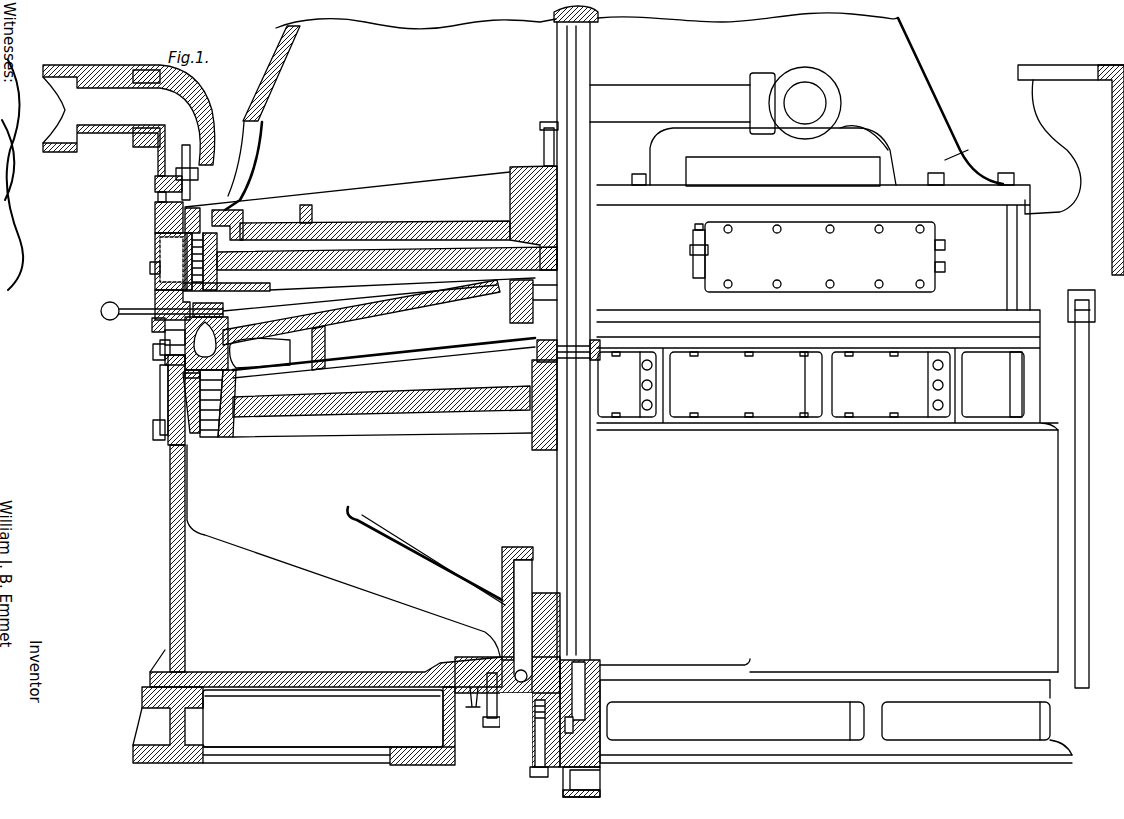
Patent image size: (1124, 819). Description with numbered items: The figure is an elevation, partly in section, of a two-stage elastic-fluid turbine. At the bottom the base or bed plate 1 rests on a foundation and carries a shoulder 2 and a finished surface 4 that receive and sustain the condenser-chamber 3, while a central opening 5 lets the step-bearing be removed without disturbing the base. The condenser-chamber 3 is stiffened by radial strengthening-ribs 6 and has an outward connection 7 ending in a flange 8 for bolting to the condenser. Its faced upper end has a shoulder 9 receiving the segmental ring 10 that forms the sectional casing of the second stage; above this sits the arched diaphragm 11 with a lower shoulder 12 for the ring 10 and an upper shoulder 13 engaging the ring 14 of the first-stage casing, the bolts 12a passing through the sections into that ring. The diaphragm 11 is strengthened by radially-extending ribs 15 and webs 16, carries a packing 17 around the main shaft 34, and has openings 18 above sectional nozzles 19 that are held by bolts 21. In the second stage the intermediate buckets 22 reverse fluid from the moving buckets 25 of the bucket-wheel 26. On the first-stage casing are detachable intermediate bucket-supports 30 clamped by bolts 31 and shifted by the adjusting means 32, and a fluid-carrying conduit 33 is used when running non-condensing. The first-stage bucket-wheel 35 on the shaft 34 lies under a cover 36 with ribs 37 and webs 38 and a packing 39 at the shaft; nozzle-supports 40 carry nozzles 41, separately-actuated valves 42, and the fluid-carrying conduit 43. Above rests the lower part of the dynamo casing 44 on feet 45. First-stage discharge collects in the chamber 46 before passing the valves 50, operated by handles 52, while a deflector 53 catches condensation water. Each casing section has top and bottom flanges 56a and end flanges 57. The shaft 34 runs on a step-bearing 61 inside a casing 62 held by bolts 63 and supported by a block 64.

The base or bed plate 1 is at (142, 695).
The shoulder 2 is at (203, 708).
The condenser-chamber 3 is at (343, 550).
The finished surface 4 is at (443, 703).
The central opening 5 is at (472, 712).
The strengthening-ribs 6 is at (385, 535).
The connection 7 is at (1004, 551).
The flange 8 is at (1090, 638).
The shoulder 9 is at (168, 455).
The segmental ring 10 is at (160, 407).
The diaphragm 11 is at (155, 340).
The lower shoulder 12 is at (160, 358).
The bolts 12a is at (160, 356).
The upper shoulder 13 is at (152, 325).
The ring 14 is at (128, 292).
The radially-extending ribs 15 is at (378, 312).
The webs 16 is at (325, 345).
The packing 17 is at (580, 302).
The openings 18 is at (210, 325).
The nozzles 19 is at (240, 358).
The bolts 21 is at (185, 360).
The intermediate buckets 22 is at (240, 387).
The moving buckets 25 is at (185, 380).
The bucket-wheel 26 is at (425, 400).
The intermediate bucket-supports 30 is at (130, 234).
The bolts 31 is at (733, 235).
The adjusting means 32 is at (692, 238).
The fluid-carrying conduit 33 is at (1066, 128).
The main shaft 34 is at (566, 97).
The bucket-wheel 35 is at (445, 250).
The cover 36 is at (352, 233).
The radially-extending ribs 37 is at (400, 193).
The webs 38 is at (308, 205).
The packing 39 is at (547, 165).
The nozzle-supports 40 is at (862, 150).
The nozzle 41 is at (245, 222).
The separately-actuated valves 42 is at (223, 186).
The fluid-carrying conduit 43 is at (78, 105).
The lower part of the casing of a dynamo-electric machine 44 is at (906, 70).
The feet or supports 45 is at (940, 153).
The chamber 46 is at (379, 294).
The valves 50 is at (222, 305).
The handle 52 is at (100, 311).
The deflector 53 is at (200, 297).
The top and bottom flange 56a is at (777, 340).
The end flanges 57 is at (670, 389).
The step-bearing 61 is at (603, 672).
The casing 62 is at (504, 555).
The bolts 63 is at (492, 727).
The block 64 is at (530, 770).